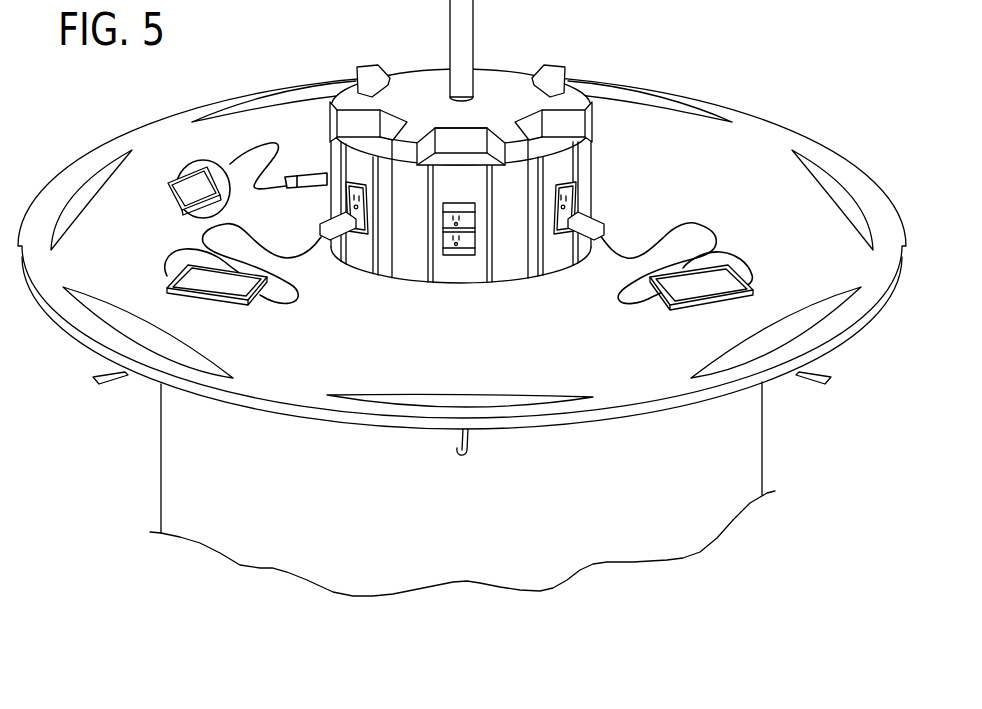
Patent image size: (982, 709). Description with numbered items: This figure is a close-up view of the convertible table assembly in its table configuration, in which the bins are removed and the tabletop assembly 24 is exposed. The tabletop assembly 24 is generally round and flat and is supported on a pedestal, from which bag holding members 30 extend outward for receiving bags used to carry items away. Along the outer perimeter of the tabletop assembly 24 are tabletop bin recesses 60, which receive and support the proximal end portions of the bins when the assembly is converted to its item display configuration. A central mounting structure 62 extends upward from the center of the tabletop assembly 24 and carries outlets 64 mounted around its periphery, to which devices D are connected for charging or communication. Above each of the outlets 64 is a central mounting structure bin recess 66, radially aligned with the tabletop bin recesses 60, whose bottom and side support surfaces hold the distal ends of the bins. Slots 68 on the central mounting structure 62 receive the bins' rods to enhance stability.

The tabletop assembly 24 is at (645, 128).
The bag holding members 30 is at (106, 386).
The tabletop bin recesses 60 is at (293, 93).
The central mounting structure 62 is at (500, 80).
The outlets 64 is at (445, 250).
The central mounting structure bin recesses 66 is at (363, 87).
The slots 68 is at (490, 257).
The devices D is at (232, 288).